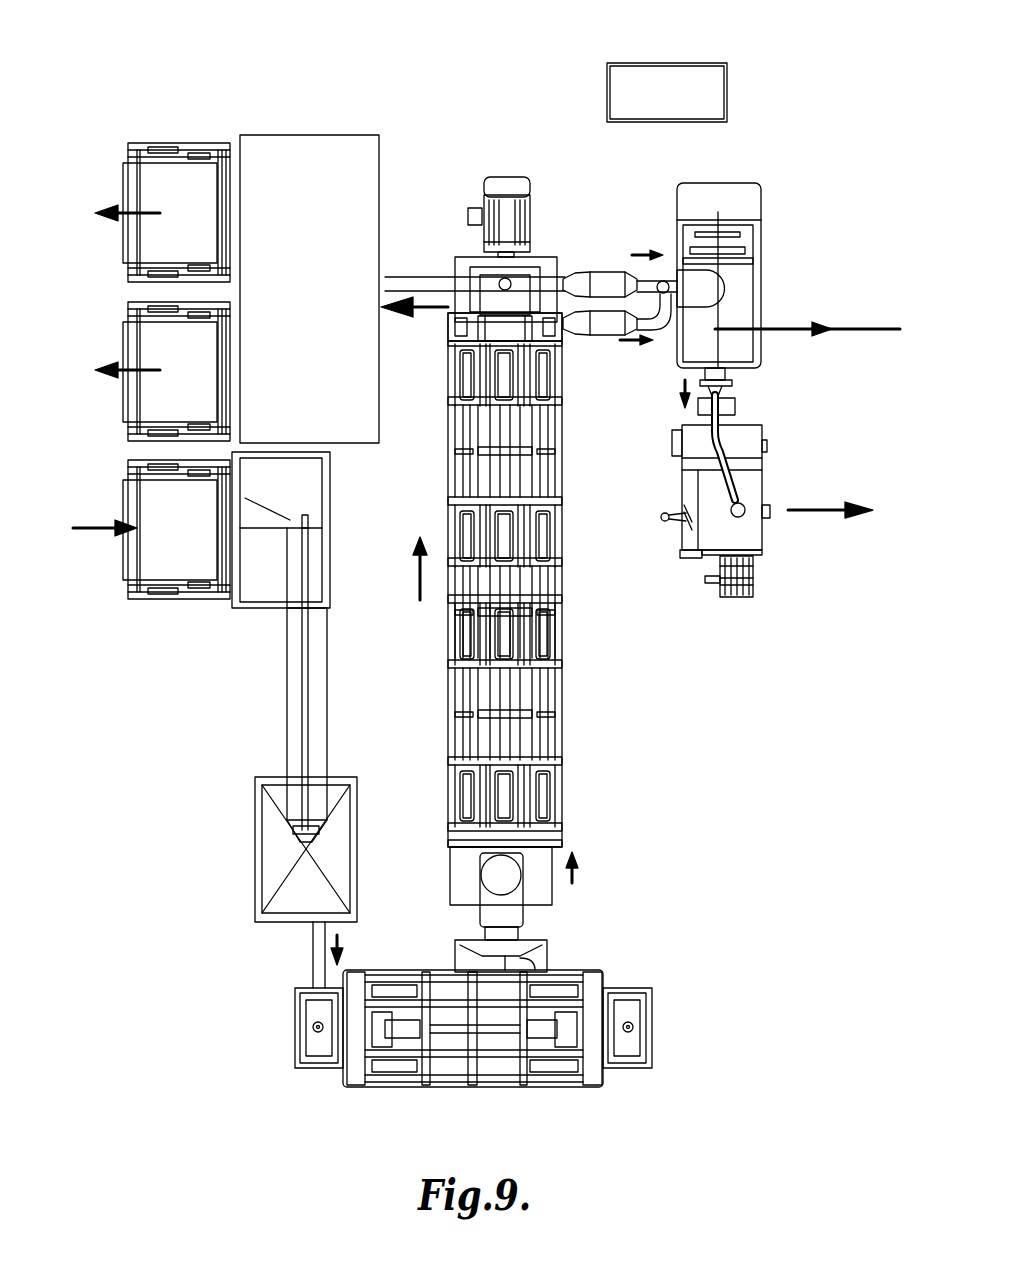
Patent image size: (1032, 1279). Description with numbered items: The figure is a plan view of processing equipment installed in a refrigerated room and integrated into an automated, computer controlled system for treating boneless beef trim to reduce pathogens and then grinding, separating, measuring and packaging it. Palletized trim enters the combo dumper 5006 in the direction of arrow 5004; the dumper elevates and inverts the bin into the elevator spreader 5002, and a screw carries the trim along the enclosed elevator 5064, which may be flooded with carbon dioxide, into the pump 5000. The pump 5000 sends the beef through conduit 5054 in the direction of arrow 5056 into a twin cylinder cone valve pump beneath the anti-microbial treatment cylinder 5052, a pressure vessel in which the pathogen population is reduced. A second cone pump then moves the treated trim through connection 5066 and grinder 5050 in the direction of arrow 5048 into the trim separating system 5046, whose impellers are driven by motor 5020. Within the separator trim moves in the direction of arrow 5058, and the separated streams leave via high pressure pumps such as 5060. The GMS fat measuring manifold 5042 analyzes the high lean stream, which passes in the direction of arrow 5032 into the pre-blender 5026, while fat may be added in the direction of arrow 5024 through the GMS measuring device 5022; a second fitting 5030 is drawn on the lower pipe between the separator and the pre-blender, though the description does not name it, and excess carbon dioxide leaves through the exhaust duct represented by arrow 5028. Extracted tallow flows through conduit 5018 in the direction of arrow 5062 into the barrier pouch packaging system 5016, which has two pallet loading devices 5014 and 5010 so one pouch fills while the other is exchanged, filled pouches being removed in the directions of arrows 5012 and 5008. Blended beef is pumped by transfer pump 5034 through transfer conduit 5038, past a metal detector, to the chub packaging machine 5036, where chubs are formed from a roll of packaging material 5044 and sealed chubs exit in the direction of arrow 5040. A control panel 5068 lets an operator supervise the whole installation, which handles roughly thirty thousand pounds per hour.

The pump 5000 is at (270, 848).
The elevator spreader 5002 is at (275, 583).
The arrow 5004 is at (102, 532).
The combo dumper 5006 is at (148, 502).
The arrow 5008 is at (132, 375).
The pallet loading device 5010 is at (172, 343).
The arrow 5012 is at (132, 210).
The pallet loading device 5014 is at (178, 190).
The barrier pouch packaging system 5016 is at (361, 148).
The conduit 5018 is at (405, 282).
The motor 5020 is at (510, 190).
The GMS measuring device 5022 is at (592, 275).
The arrow 5024 is at (643, 253).
The pre-blender 5026 is at (727, 303).
The arrow 5028 is at (770, 326).
The pipe fitting 5030 is at (595, 330).
The arrow 5032 is at (672, 400).
The transfer pump 5034 is at (722, 382).
The chub packaging machine 5036 is at (742, 440).
The transfer conduit 5038 is at (740, 493).
The arrow 5040 is at (813, 515).
The GMS fat measuring manifold 5042 is at (582, 335).
The roll of packaging material 5044 is at (740, 598).
The trim separating system 5046 is at (540, 745).
The arrow 5048 is at (578, 868).
The grinder 5050 is at (508, 950).
The anti-microbial treatment cylinder 5052 is at (555, 997).
The conduit 5054 is at (318, 958).
The arrow 5056 is at (347, 948).
The arrow 5058 is at (415, 600).
The high pressure pump 5060 is at (488, 332).
The arrow 5062 is at (432, 318).
The elevator 5064 is at (312, 732).
The connection 5066 is at (487, 898).
The control panel 5068 is at (690, 64).